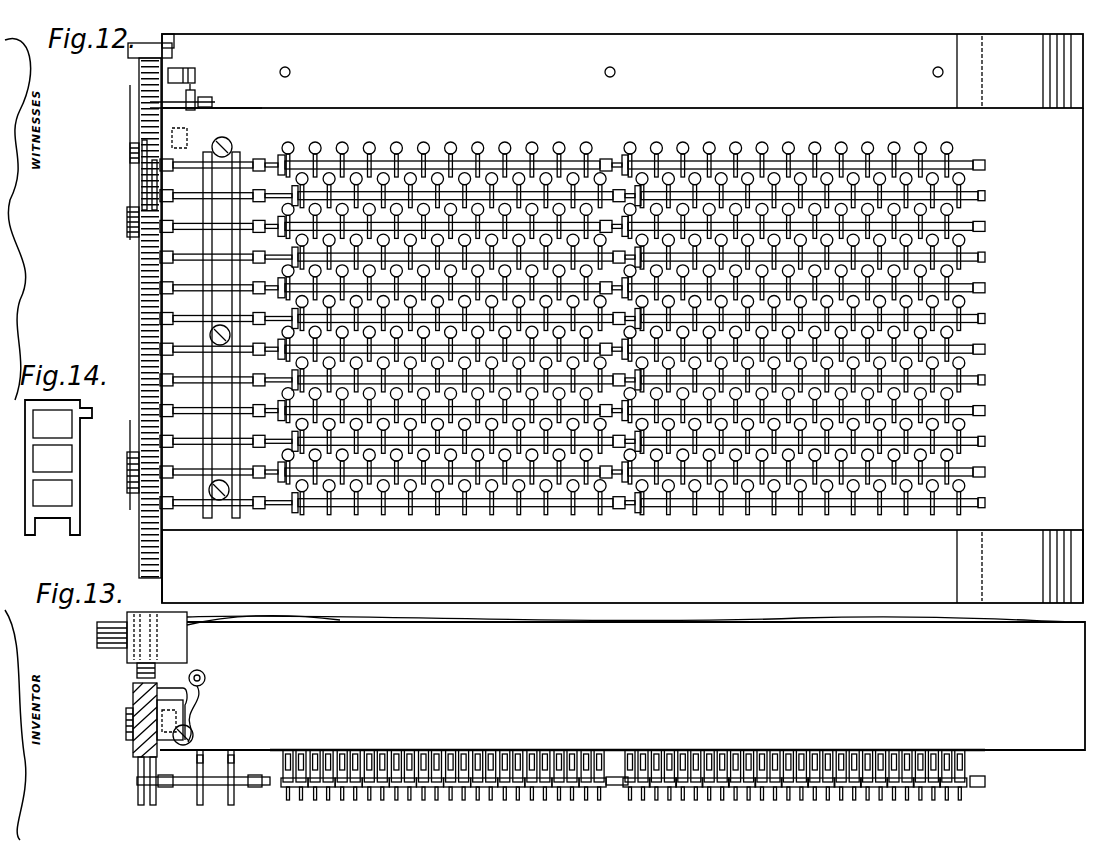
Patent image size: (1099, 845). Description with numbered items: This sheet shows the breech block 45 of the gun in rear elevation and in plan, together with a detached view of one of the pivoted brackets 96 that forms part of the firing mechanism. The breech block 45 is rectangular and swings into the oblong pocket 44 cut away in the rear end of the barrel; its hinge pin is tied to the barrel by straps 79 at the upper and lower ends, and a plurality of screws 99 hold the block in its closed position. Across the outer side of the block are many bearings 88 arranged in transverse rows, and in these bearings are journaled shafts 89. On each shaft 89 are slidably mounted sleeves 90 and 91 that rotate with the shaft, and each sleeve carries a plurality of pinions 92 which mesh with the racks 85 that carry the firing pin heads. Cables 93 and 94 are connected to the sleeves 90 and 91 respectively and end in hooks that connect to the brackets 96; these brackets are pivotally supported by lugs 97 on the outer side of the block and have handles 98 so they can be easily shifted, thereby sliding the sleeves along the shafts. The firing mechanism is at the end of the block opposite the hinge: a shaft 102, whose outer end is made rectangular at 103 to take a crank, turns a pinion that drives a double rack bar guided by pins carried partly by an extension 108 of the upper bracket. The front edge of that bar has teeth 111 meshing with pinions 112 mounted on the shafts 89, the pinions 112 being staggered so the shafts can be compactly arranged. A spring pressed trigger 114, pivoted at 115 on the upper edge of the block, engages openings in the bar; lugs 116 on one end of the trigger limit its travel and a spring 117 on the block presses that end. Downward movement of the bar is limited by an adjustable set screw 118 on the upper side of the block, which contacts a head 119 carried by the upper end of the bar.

In FIG. 12, the oblong pocket 44 is at (642, 538).
In FIG. 12, the breech block 45 is at (678, 120).
In FIG. 13, the breech block 45 is at (622, 683).
In FIG. 12, the straps 79 is at (988, 88).
In FIG. 12, the racks 85 is at (362, 144).
In FIG. 13, the racks 85 is at (405, 740).
In FIG. 12, the bearings 88 is at (284, 160).
In FIG. 13, the bearings 88 is at (608, 775).
In FIG. 12, the shafts 89 is at (266, 155).
In FIG. 12, the sleeve 90 is at (250, 157).
In FIG. 13, the sleeve 90 is at (425, 760).
In FIG. 12, the sleeve 91 is at (668, 160).
In FIG. 13, the sleeve 91 is at (728, 780).
In FIG. 12, the pinions 92 is at (552, 147).
In FIG. 13, the pinions 92 is at (962, 798).
In FIG. 13, the cable 93 is at (278, 745).
In FIG. 13, the cable 94 is at (288, 745).
In FIG. 12, the brackets 96 is at (233, 272).
In FIG. 14, the brackets 96 is at (80, 468).
In FIG. 13, the brackets 96 is at (232, 766).
In FIG. 13, the lugs 97 is at (203, 750).
In FIG. 12, the handles 98 is at (207, 338).
In FIG. 12, the screws 99 is at (213, 345).
In FIG. 13, the shaft 102 is at (137, 645).
In FIG. 13, the rectangular end 103 is at (105, 642).
In FIG. 12, the extension 108 is at (150, 102).
In FIG. 13, the extension 108 is at (140, 652).
In FIG. 12, the teeth 111 is at (128, 67).
In FIG. 12, the pinions 112 is at (140, 210).
In FIG. 13, the pinions 112 is at (150, 764).
In FIG. 12, the trigger 114 is at (160, 133).
In FIG. 13, the trigger 114 is at (207, 688).
In FIG. 13, the pivot 115 is at (126, 733).
In FIG. 13, the lugs 116 is at (133, 710).
In FIG. 12, the spring 117 is at (208, 104).
In FIG. 13, the spring 117 is at (200, 668).
In FIG. 12, the set screw 118 is at (197, 73).
In FIG. 13, the set screw 118 is at (280, 620).
In FIG. 12, the head 119 is at (163, 50).